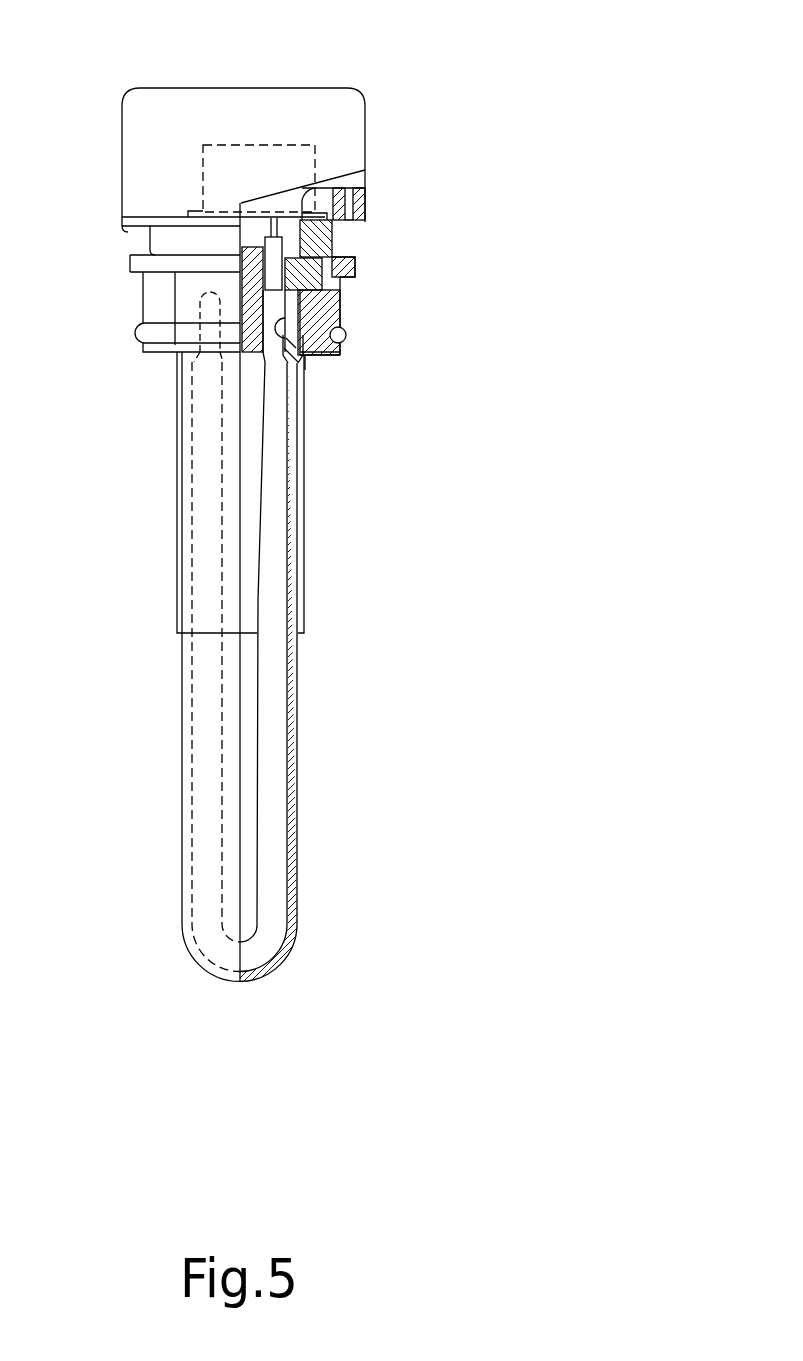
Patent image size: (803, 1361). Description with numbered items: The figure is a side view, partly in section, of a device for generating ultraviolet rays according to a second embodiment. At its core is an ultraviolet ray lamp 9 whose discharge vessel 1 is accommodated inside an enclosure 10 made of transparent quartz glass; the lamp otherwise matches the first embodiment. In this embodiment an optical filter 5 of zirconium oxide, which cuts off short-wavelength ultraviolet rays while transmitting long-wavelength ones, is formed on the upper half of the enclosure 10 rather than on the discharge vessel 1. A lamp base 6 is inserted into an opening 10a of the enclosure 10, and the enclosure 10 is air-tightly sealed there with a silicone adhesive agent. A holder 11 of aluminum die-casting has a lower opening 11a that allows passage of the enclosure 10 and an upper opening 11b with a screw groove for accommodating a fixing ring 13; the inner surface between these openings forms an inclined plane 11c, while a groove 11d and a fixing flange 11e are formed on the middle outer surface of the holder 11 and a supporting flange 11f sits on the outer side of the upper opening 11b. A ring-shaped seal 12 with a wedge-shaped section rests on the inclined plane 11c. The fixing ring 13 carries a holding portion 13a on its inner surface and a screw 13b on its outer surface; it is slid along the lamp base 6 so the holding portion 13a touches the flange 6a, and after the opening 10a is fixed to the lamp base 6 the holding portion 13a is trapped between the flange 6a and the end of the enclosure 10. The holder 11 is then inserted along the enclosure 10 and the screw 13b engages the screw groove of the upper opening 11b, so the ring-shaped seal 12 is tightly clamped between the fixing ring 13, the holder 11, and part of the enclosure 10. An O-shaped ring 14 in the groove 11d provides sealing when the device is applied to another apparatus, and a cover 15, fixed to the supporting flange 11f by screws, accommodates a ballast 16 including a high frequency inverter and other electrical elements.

The discharge vessel 1 is at (267, 505).
The optical filter 5 is at (303, 600).
The lamp base 6 is at (240, 293).
The flange 6a is at (240, 243).
The ultraviolet ray lamp 9 is at (280, 548).
The enclosure 10 is at (298, 772).
The opening 10a is at (340, 271).
The holder 11 is at (340, 306).
The lower opening 11a is at (310, 360).
The upper opening 11b is at (365, 170).
The inclined plane 11c is at (318, 355).
The groove 11d is at (340, 352).
The fixing flange 11e is at (345, 262).
The supporting flange 11f is at (123, 227).
The ring-shaped seal 12 is at (340, 290).
The fixing ring 13 is at (320, 246).
The holding portion 13a is at (240, 268).
The screw 13b is at (335, 230).
The O-shaped ring 14 is at (346, 334).
The cover 15 is at (368, 122).
The ballast 16 is at (245, 143).